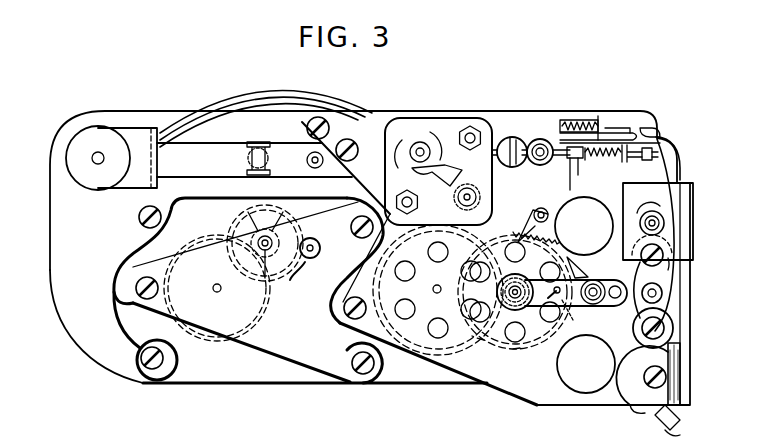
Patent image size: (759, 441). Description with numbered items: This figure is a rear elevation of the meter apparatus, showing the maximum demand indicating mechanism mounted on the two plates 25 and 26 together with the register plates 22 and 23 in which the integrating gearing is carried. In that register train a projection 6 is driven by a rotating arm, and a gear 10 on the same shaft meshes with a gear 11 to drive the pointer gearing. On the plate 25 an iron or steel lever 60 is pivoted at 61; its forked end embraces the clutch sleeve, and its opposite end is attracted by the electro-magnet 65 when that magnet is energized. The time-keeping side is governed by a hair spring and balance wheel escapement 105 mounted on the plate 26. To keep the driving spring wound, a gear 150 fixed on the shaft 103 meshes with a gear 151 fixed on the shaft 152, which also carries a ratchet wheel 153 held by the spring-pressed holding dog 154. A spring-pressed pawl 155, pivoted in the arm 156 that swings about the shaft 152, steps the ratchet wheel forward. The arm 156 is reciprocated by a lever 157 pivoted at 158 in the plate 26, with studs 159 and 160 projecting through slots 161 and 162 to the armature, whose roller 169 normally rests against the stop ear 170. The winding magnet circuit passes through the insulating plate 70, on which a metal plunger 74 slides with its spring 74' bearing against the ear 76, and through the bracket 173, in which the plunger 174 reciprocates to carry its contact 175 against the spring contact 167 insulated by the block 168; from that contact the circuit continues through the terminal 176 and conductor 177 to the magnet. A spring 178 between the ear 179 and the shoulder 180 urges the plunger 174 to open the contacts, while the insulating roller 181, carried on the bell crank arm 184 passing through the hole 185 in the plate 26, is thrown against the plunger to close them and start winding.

The plate 25 is at (70, 298).
The plate 22 is at (305, 383).
The plate 26 is at (523, 398).
The plate 23 is at (267, 347).
The gear 150 is at (355, 328).
The electro-magnet 65 is at (86, 118).
The lever 60 is at (264, 133).
The pivot 61 is at (258, 149).
The gear 11 is at (230, 219).
The projection 6 is at (298, 272).
The gear 10 is at (311, 259).
The escapement 105 is at (454, 123).
The shaft 152 is at (503, 292).
The shaft 103 is at (433, 293).
The gear 151 is at (496, 343).
The ratchet wheel 153 is at (522, 356).
The spring-pressed pawl 155 is at (577, 268).
The plunger 174 is at (578, 165).
The stop ear 170 is at (623, 217).
The arm 156 is at (610, 307).
The spring-pressed holding dog 154 is at (527, 217).
The arm 184 is at (502, 135).
The hole 185 is at (512, 147).
The insulating roller 181 is at (540, 139).
The spring 74' is at (579, 108).
The ear 76 is at (598, 120).
The metal plunger 74 is at (602, 118).
The ear 179 is at (650, 128).
The plate of insulating material 70 is at (660, 140).
The spring contact 167 is at (672, 188).
The roller 169 is at (667, 200).
The bracket 173 is at (568, 160).
The spring 178 is at (603, 166).
The contact 175 is at (647, 159).
The shoulder 180 is at (578, 161).
The stud 159 is at (667, 251).
The slot 161 is at (673, 263).
The lever 157 is at (667, 281).
The pivot 158 is at (663, 293).
The slot 162 is at (673, 325).
The stud 160 is at (682, 343).
The insulating block 168 is at (678, 378).
The conductor 177 is at (637, 406).
The terminal 176 is at (681, 422).